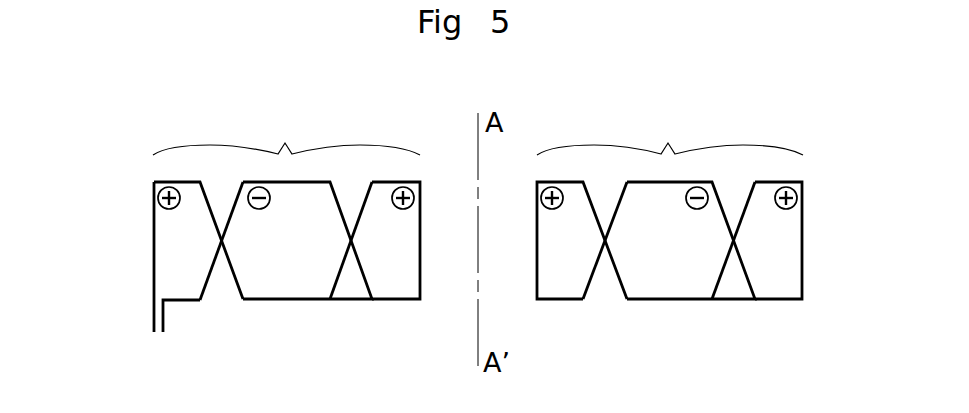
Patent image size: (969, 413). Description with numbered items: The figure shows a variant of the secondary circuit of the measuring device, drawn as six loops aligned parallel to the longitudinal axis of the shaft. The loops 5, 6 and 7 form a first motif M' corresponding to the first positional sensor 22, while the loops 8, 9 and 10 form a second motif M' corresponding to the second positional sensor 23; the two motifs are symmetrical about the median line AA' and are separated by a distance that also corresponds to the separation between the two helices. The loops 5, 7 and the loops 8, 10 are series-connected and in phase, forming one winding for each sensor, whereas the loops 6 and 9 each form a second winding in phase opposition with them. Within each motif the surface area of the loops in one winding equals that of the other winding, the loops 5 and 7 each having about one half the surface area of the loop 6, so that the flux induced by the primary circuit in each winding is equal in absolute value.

The loop 5 is at (198, 241).
The loop 6 is at (307, 240).
The loop 7 is at (396, 240).
The loop 8 is at (582, 240).
The loop 9 is at (691, 240).
The loop 10 is at (775, 240).
The first positional sensor 22 is at (143, 116).
The second positional sensor 23 is at (770, 116).